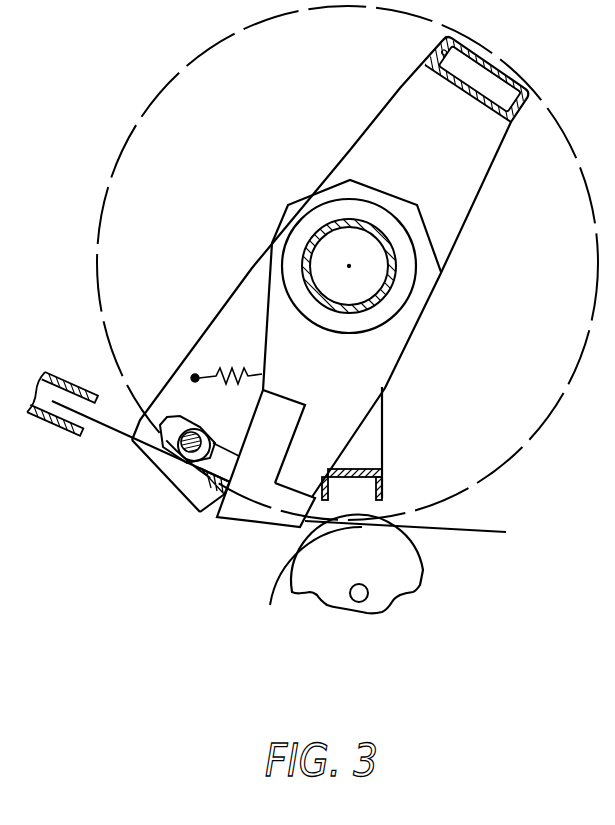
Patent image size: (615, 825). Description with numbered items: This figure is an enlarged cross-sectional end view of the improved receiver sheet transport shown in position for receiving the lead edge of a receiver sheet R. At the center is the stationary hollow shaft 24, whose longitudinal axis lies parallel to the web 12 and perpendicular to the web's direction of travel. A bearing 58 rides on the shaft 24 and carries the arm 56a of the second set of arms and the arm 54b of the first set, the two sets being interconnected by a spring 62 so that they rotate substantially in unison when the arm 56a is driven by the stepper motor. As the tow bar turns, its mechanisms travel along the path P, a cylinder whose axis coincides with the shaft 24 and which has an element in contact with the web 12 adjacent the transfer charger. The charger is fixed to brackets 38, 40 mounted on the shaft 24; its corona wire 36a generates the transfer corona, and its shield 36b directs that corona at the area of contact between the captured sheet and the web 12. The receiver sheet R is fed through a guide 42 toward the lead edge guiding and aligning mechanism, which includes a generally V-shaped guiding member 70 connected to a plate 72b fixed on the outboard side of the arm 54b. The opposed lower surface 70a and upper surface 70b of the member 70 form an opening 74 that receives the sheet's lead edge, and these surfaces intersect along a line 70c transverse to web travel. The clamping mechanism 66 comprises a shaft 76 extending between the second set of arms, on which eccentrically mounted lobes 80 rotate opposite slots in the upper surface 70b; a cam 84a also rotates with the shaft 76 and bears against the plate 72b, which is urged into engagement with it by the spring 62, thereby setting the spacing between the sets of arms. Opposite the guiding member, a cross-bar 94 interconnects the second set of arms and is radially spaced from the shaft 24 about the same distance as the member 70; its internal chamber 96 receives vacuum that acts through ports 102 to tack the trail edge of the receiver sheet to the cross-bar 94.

The web 12 is at (474, 531).
The stationary hollow shaft 24 is at (379, 224).
The corona wire 36a is at (356, 487).
The shield 36b is at (380, 475).
The bracket 38 is at (362, 448).
The bracket 40 is at (383, 408).
The guide 42 is at (50, 427).
The arm of first set of arms 54b is at (268, 287).
The arm of second set of arms 56a is at (471, 214).
The bearing 58 is at (283, 250).
The spring 62 is at (226, 374).
The clamping mechanism 66 is at (163, 429).
The guiding member 70 is at (210, 493).
The lower surface 70a is at (202, 496).
The upper surface 70b is at (224, 470).
The line of intersection 70c is at (223, 488).
The plate 72b is at (296, 401).
The opening 74 is at (163, 489).
The shaft 76 is at (198, 433).
The lobe 80 is at (216, 441).
The cam 84a is at (178, 416).
The cross-bar 94 is at (494, 116).
The internal chamber 96 is at (443, 37).
The port 102 is at (488, 54).
The path P is at (557, 423).
The receiver sheet R is at (103, 426).